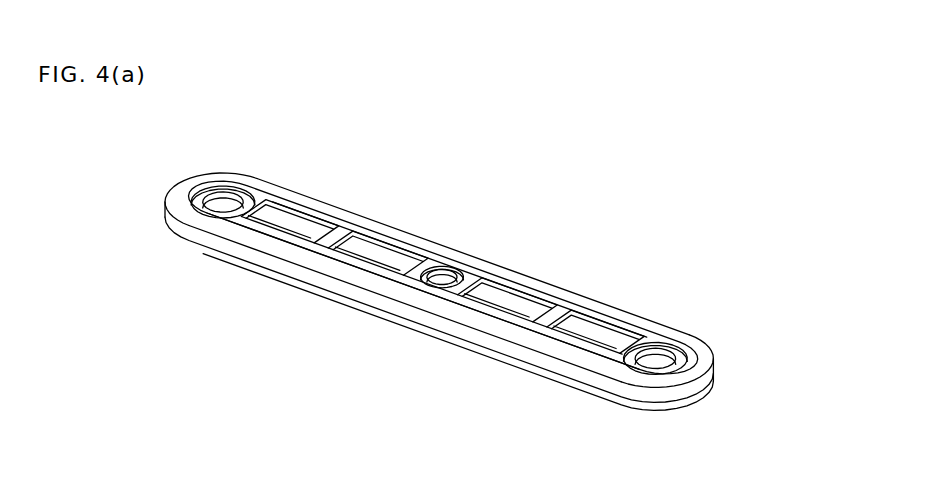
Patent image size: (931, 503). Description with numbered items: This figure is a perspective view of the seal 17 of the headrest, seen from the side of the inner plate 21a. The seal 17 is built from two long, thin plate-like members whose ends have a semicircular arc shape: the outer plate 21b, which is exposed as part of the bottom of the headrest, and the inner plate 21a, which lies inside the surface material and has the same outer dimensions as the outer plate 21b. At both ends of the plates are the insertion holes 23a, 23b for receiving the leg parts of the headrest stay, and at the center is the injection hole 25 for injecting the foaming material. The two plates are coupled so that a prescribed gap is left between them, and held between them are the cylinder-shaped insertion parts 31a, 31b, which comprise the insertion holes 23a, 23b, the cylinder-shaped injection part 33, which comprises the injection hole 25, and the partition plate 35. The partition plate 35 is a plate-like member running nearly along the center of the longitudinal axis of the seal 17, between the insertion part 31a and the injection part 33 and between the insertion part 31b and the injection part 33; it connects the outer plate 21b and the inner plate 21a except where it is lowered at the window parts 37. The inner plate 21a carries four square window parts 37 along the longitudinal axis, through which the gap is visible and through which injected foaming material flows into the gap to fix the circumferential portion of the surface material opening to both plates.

The seal 17 is at (603, 239).
The inner plate 21a is at (590, 297).
The outer plate 21b is at (561, 384).
The insertion hole 23a is at (693, 341).
The insertion hole 23b is at (228, 197).
The injection hole 25 is at (425, 263).
The insertion part 31a is at (660, 346).
The insertion part 31b is at (193, 205).
The injection part 33 is at (420, 260).
The partition plate 35 is at (360, 279).
The window part 37 is at (383, 253).